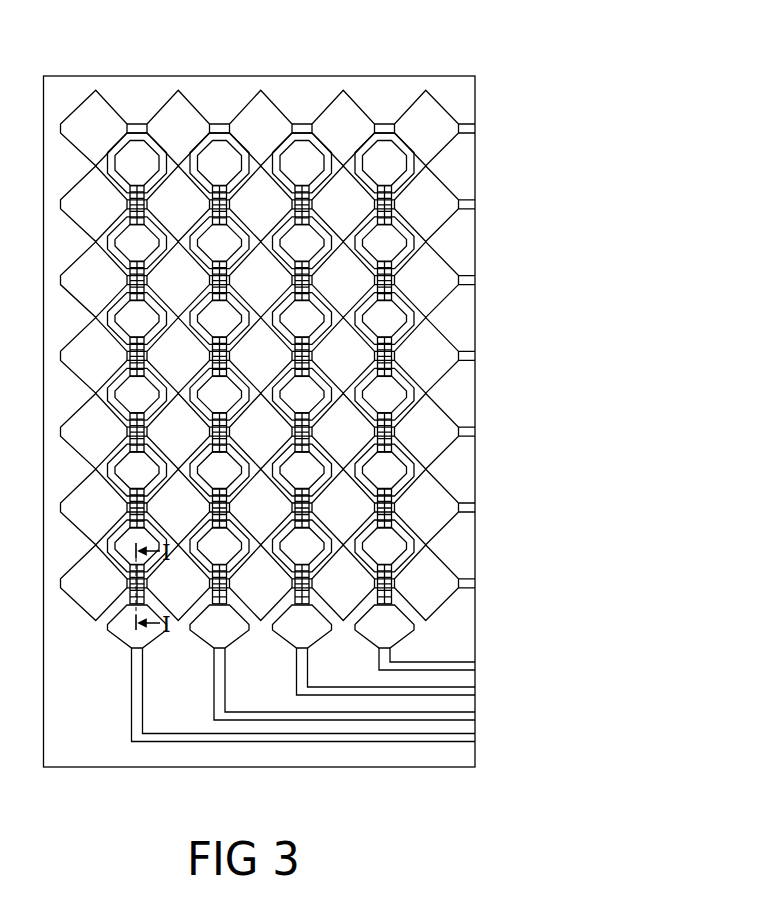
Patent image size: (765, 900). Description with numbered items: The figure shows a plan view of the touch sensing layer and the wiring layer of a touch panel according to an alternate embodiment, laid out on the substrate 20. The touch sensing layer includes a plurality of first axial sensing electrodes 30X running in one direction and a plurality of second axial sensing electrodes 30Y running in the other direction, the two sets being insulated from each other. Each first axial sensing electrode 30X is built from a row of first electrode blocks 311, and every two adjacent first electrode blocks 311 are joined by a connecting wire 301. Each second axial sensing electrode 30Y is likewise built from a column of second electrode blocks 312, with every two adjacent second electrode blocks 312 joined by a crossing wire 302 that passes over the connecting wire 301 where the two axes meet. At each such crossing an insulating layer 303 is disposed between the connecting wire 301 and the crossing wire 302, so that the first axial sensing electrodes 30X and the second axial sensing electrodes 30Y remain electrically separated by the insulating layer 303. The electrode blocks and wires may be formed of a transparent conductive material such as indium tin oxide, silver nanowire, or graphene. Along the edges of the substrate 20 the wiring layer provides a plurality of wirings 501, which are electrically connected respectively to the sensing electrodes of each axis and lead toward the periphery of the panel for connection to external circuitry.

The substrate 20 is at (136, 104).
The first axial sensing electrodes 30X is at (304, 320).
The second axial sensing electrodes 30Y is at (327, 333).
The connecting wire 301 is at (385, 125).
The crossing wire 302 is at (392, 489).
The insulating layer 303 is at (390, 580).
The first electrode blocks 311 is at (328, 122).
The second electrode blocks 312 is at (390, 547).
The wirings 501 is at (467, 123).